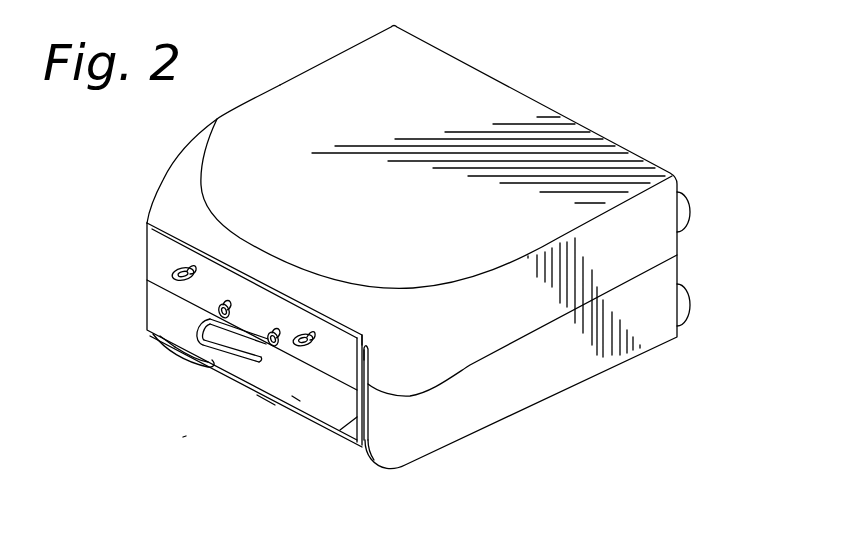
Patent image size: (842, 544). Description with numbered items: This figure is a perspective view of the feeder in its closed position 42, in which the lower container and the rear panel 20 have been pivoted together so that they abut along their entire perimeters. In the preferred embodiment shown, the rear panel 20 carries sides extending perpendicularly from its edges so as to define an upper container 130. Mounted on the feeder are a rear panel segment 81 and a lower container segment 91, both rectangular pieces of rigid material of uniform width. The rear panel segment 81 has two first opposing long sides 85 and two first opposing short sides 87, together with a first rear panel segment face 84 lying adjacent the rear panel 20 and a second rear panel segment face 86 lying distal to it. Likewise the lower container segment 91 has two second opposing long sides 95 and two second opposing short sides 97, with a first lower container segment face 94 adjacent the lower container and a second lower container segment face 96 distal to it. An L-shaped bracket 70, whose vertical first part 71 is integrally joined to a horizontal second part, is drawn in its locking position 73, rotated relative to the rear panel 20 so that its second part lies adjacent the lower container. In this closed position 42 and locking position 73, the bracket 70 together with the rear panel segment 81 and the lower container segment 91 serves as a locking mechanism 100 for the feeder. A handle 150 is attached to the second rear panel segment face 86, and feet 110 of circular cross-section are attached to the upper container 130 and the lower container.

The upper container 130 is at (497, 37).
The rear panel 20 is at (519, 87).
The closed position 42 is at (673, 78).
The foot 110 is at (691, 212).
The locking mechanism 100 is at (232, 327).
The rear panel segment 81 is at (147, 229).
The first opposing short sides 87 is at (147, 260).
The lower container segment 91 is at (147, 293).
The second opposing short sides 97 is at (147, 303).
The first opposing long sides 85 is at (173, 232).
The handle 150 is at (215, 352).
The L-shaped bracket 70 is at (173, 358).
The second opposing long sides 95 is at (160, 336).
The second lower container segment face 96 is at (292, 396).
The first lower container segment face 94 is at (357, 417).
The second rear panel segment face 86 is at (332, 338).
The first rear panel segment face 84 is at (364, 344).
The first part 71 is at (368, 437).
The locking position 73 is at (187, 436).